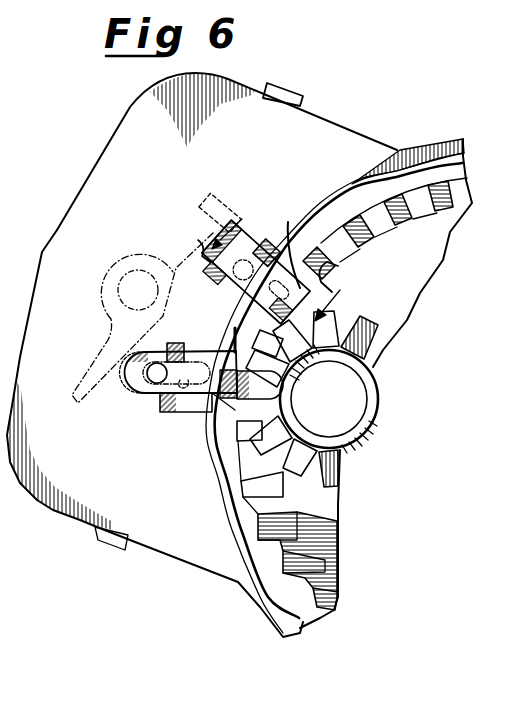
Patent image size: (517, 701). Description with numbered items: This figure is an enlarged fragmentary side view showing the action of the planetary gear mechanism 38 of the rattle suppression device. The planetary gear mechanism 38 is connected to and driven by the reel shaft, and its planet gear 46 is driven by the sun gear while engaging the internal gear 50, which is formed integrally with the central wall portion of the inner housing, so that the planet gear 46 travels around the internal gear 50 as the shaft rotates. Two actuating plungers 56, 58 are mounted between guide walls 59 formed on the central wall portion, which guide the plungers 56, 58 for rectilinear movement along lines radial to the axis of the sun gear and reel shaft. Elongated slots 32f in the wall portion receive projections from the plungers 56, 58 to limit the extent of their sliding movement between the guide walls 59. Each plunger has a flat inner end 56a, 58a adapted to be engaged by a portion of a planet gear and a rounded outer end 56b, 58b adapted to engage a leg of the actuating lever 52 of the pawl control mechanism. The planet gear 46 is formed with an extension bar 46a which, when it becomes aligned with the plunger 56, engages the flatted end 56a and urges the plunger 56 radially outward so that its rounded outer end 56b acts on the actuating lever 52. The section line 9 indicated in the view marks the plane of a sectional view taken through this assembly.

The planetary gear mechanism 38 is at (404, 371).
The internal gear 50 is at (458, 190).
The planet gear 46 is at (370, 439).
The extension bar 46a is at (236, 345).
The actuating plunger 58 is at (288, 248).
The flat inner end 58a is at (328, 262).
The rounded outer end 58b is at (198, 247).
The guide walls 59 is at (246, 232).
The elongated slots 32f is at (206, 225).
The section line 9- 9 is at (280, 260).
The actuating plunger 56 is at (130, 394).
The flat inner end 56a is at (233, 415).
The rounded outer end 56b is at (103, 378).
The actuating lever 52 is at (72, 387).